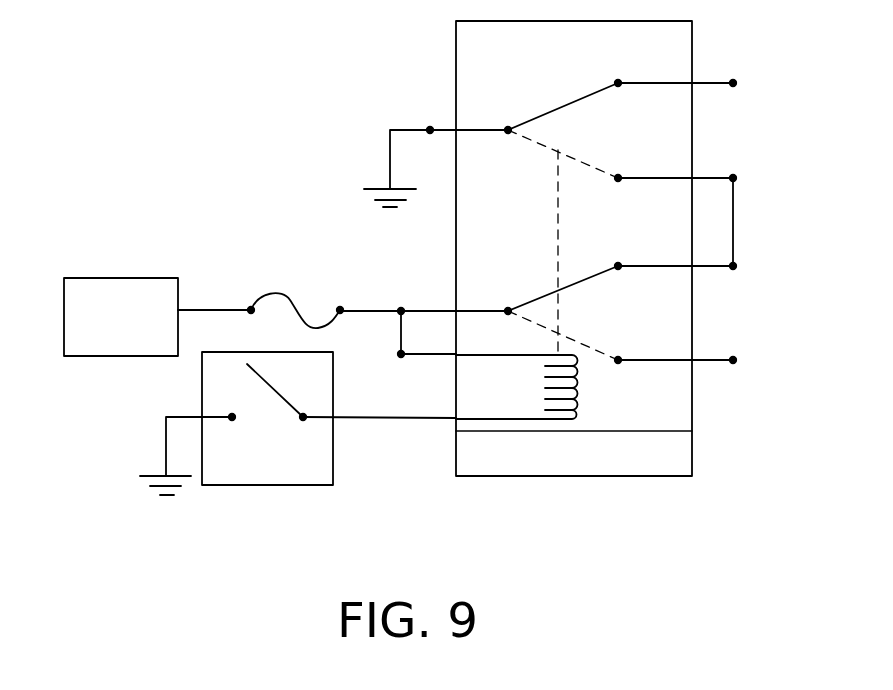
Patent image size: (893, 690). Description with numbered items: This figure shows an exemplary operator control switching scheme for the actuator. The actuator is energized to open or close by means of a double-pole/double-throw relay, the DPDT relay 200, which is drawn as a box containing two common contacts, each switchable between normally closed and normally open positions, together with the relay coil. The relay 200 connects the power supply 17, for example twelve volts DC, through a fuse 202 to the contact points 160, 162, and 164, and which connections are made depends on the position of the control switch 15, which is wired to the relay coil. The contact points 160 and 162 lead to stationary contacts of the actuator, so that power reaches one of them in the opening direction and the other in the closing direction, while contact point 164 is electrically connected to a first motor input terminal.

The DPDT relay 200 is at (456, 65).
The fuse 202 is at (280, 293).
The power supply 17 is at (98, 278).
The control switch 15 is at (333, 480).
The contact point 162 is at (707, 85).
The contact point 164 is at (737, 266).
The contact point 160 is at (707, 360).